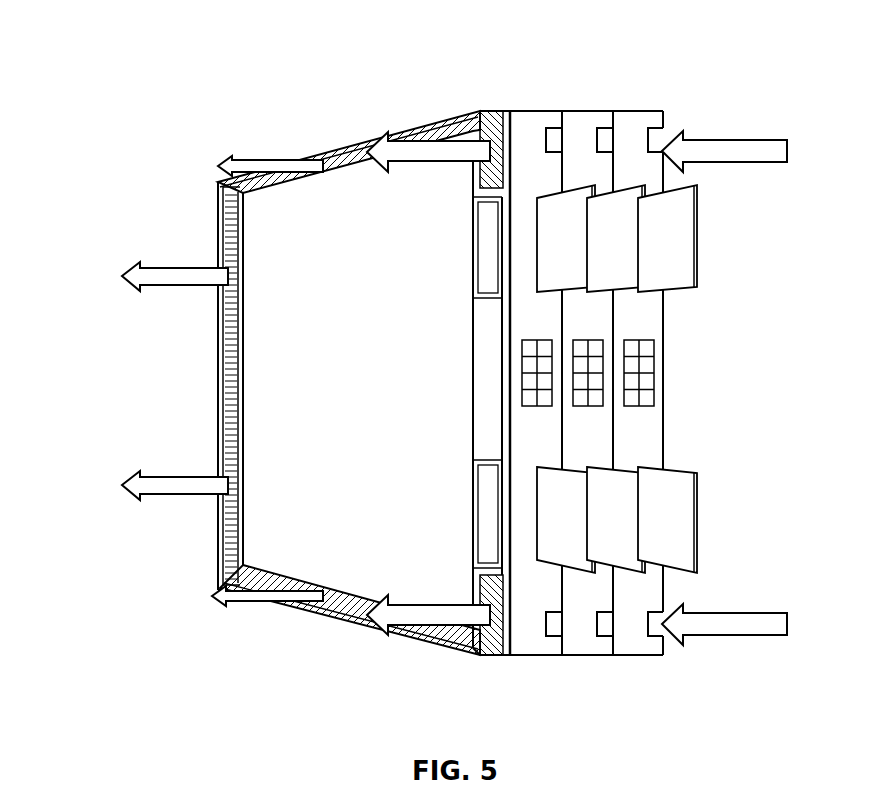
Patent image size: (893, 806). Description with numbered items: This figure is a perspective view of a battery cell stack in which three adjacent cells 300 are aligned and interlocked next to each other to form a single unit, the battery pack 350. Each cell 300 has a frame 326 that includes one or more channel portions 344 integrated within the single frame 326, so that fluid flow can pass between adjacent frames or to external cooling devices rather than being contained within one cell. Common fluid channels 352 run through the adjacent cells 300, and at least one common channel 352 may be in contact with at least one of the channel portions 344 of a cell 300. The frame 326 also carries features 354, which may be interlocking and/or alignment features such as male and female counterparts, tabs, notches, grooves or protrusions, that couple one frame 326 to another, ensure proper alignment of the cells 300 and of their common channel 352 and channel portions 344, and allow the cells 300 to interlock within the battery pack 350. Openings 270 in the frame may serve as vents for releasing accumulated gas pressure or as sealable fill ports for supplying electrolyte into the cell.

The battery pack 350 is at (163, 73).
The channel portion 344 is at (345, 152).
The common fluid channel 352 is at (470, 128).
The cell 300 is at (515, 124).
The feature 354 is at (556, 140).
The frame 326 is at (518, 625).
The opening 270 is at (643, 368).